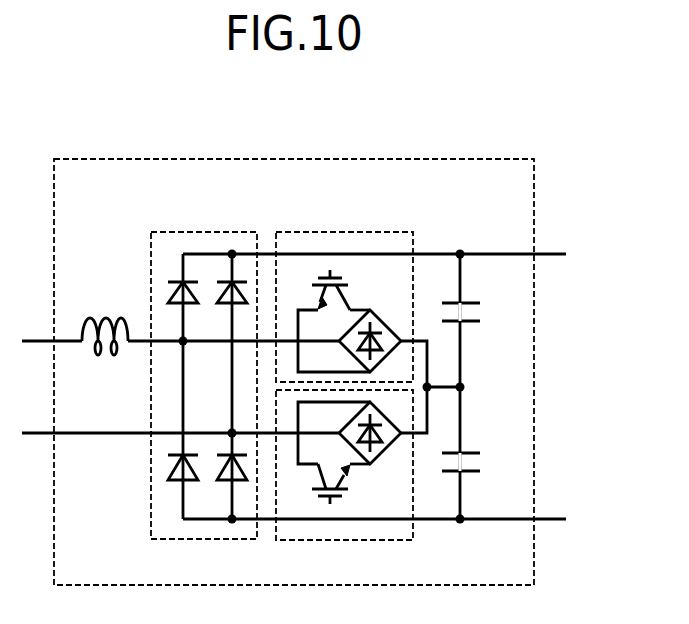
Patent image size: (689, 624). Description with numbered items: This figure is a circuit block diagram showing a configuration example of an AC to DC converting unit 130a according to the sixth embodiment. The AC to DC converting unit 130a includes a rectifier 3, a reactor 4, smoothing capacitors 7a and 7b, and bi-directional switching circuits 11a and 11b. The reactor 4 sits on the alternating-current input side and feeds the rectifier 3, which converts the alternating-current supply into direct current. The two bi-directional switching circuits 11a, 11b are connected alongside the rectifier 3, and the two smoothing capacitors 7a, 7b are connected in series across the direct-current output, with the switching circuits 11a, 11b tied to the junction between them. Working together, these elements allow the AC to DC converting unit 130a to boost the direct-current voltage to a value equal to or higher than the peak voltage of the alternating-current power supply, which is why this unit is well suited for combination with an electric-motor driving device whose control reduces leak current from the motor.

The AC to DC converting unit 130a is at (469, 153).
The rectifier 3 is at (206, 229).
The reactor 4 is at (106, 315).
The bi-directional switching circuit 11a is at (363, 229).
The bi-directional switching circuit 11b is at (361, 542).
The smoothing capacitor 7a is at (467, 303).
The smoothing capacitor 7b is at (467, 453).